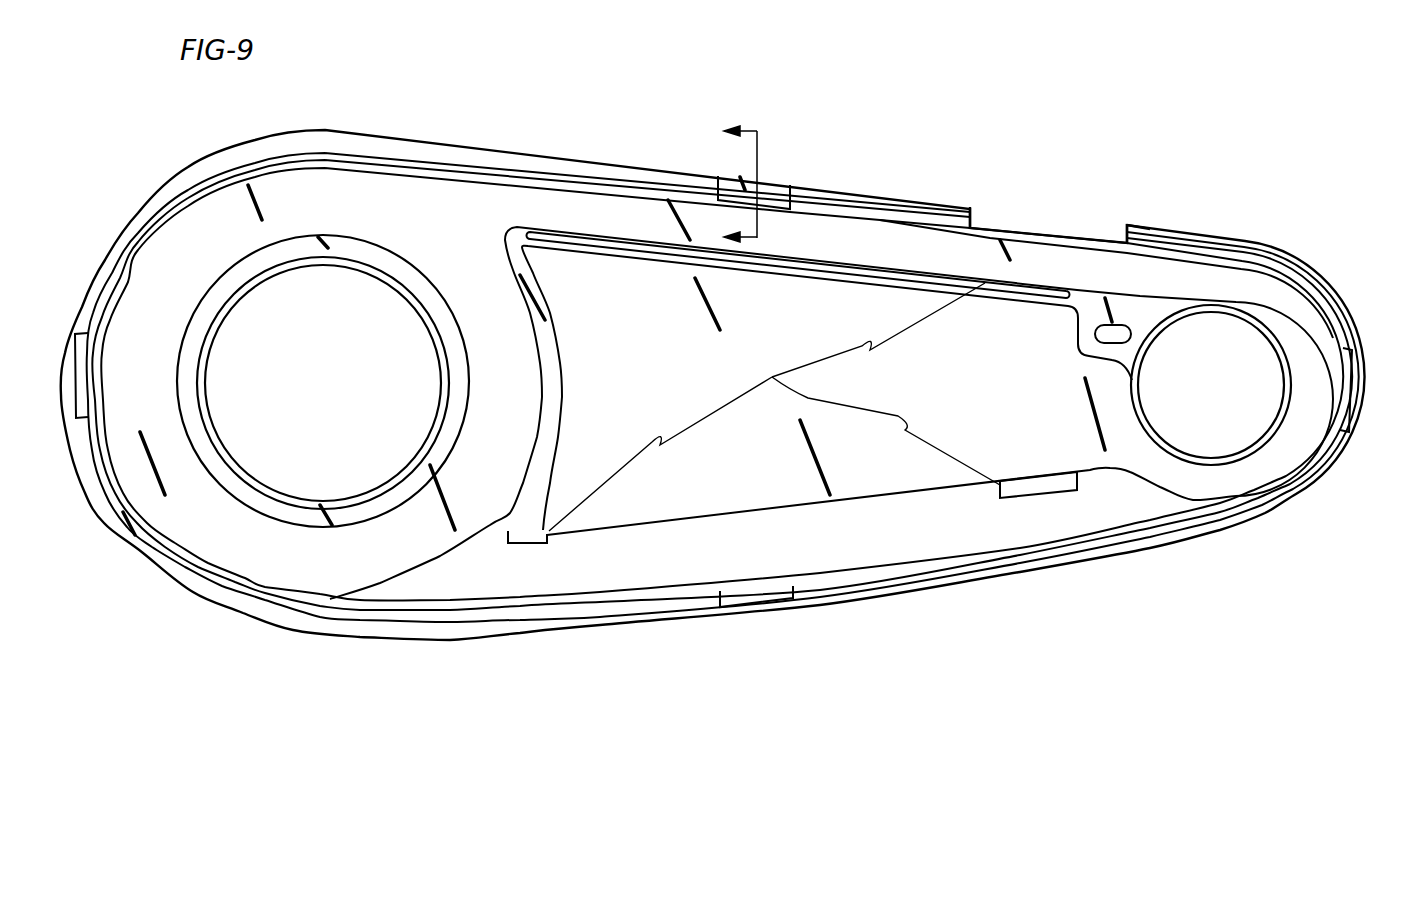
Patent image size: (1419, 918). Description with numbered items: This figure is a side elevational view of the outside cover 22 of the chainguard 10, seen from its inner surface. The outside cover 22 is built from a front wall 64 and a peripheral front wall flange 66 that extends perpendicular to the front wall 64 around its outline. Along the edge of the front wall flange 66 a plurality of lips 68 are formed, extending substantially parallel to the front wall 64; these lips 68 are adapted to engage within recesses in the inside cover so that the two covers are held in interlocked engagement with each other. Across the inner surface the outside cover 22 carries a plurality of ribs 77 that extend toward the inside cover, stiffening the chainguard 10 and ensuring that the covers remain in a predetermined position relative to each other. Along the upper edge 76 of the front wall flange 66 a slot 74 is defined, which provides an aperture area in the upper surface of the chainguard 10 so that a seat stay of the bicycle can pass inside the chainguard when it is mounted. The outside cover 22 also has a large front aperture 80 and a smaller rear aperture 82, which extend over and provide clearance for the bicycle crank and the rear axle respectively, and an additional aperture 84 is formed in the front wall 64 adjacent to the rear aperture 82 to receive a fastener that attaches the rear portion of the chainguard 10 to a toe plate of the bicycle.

The outside cover 22 is at (497, 140).
The peripheral front wall flange 66 is at (669, 178).
The front wall 64 is at (862, 490).
The lips 68 is at (72, 390).
The slot 74 is at (1047, 238).
The upper edge 76 is at (969, 207).
The ribs 77 is at (774, 407).
The front aperture 80 is at (315, 487).
The rear aperture 82 is at (1216, 430).
The additional aperture 84 is at (1115, 330).
The chainguard 10 is at (765, 185).